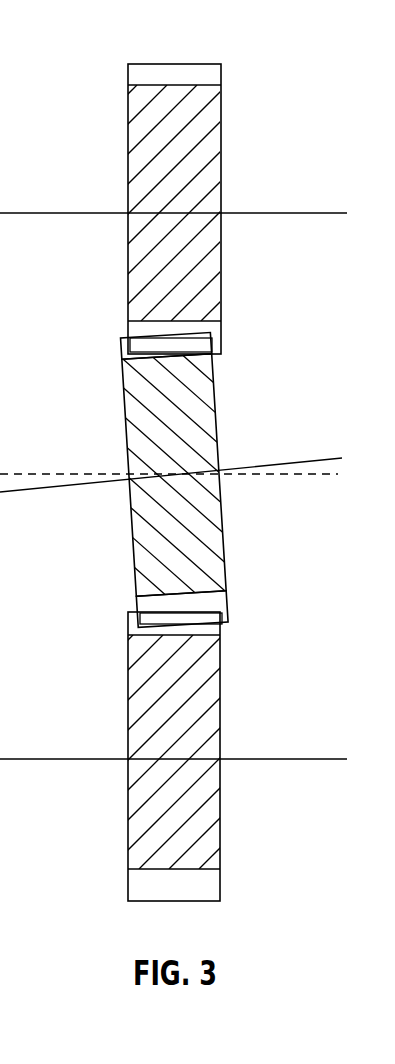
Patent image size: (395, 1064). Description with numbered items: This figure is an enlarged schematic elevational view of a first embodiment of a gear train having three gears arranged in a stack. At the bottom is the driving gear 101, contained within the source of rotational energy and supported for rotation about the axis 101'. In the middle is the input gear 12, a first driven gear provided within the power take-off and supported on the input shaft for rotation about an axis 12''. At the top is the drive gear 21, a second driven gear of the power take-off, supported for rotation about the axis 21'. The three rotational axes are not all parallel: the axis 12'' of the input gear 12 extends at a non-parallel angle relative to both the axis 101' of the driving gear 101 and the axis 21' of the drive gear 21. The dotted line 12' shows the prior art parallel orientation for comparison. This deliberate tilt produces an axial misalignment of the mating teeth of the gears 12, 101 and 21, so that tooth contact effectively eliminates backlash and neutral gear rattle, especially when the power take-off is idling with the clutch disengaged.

The drive gear 21 is at (197, 209).
The axis of the drive gear 21' is at (180, 197).
The input gear 12 is at (198, 475).
The prior art parallel axis orientation 12' is at (169, 495).
The axis of the input gear 12'' is at (192, 460).
The driving gear 101 is at (197, 756).
The axis of the driving gear 101' is at (179, 778).